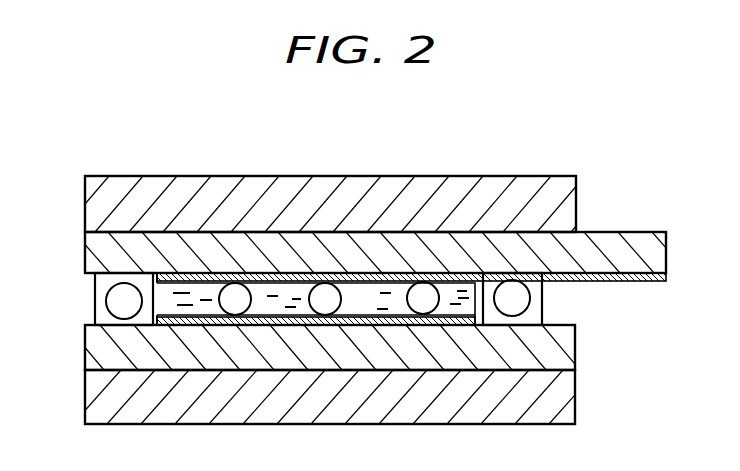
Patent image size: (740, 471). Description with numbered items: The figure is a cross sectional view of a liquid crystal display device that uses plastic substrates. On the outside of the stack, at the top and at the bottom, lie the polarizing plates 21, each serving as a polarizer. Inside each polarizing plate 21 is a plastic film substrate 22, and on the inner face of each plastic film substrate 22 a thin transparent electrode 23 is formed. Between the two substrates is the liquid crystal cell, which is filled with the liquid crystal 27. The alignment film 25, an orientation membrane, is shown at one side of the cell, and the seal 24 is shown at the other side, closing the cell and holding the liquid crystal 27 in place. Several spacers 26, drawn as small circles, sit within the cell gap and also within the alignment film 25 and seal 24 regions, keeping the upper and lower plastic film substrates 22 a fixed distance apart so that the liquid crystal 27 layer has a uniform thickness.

The polarizing plate 21 is at (567, 204).
The plastic film substrate 22 is at (662, 250).
The transparent electrode 23 is at (653, 275).
The seal 24 is at (535, 313).
The alignment film 25 is at (154, 273).
The spacer 26 is at (113, 305).
The liquid crystal 27 is at (367, 299).